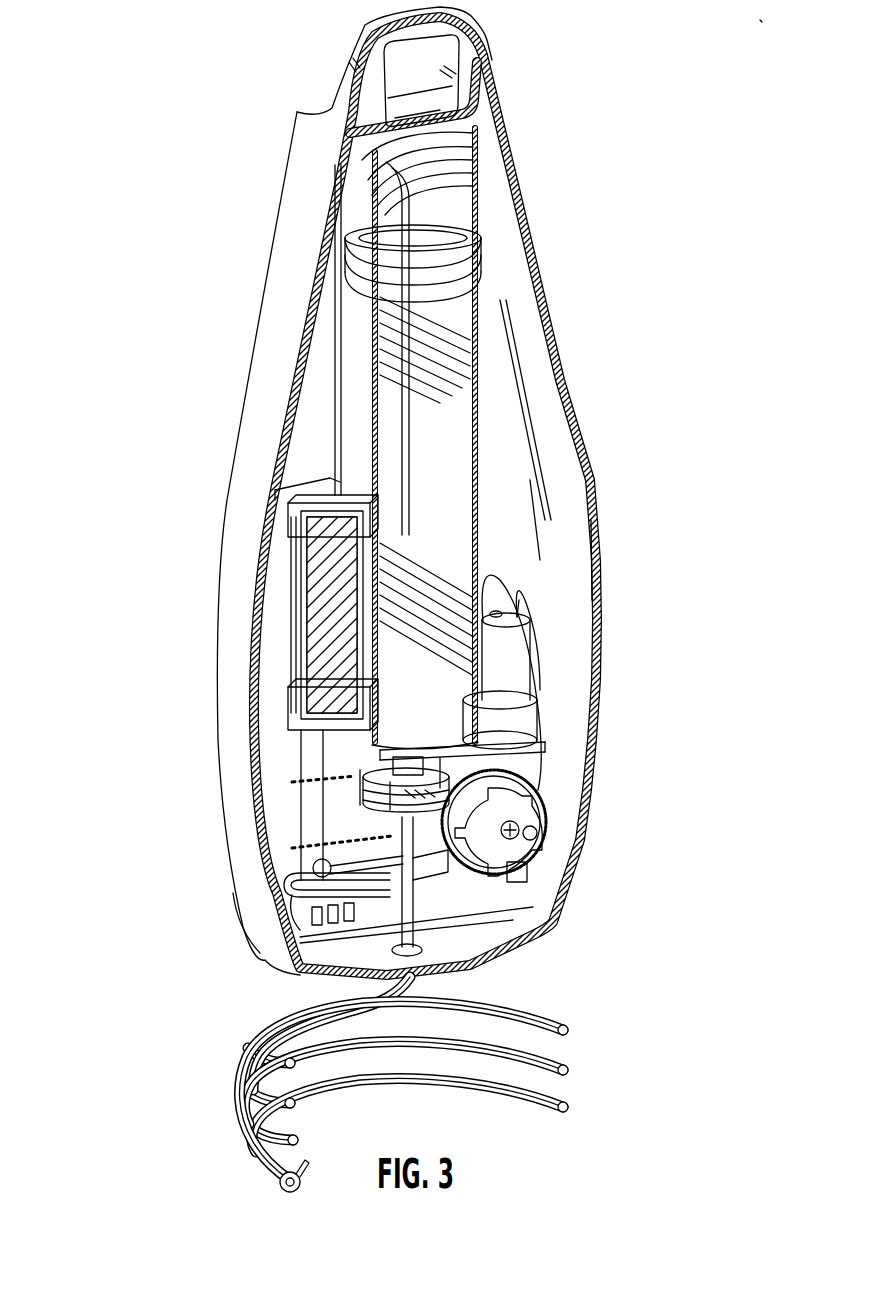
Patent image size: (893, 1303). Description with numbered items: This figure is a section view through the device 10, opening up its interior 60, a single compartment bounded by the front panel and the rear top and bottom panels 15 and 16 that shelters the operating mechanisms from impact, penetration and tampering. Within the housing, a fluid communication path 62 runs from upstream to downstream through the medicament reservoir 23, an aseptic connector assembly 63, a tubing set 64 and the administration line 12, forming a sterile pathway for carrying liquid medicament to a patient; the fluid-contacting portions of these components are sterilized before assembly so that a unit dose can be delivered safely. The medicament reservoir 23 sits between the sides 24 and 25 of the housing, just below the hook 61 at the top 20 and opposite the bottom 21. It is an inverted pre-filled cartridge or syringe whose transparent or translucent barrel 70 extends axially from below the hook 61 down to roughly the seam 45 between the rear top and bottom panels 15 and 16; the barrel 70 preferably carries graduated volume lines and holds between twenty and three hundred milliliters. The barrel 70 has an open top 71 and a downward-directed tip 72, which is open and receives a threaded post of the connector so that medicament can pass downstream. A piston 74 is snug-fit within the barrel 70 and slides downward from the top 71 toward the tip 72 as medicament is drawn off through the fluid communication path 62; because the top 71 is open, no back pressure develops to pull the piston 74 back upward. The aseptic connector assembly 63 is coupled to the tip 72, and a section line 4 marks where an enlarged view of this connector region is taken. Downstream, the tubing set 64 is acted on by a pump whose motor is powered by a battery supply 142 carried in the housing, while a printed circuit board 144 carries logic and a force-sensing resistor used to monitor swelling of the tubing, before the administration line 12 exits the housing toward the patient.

The section line 4- 4 is at (628, 698).
The device 10 is at (752, 80).
The administration line 12 is at (560, 1058).
The rear top panel 15 is at (278, 207).
The rear bottom panel 16 is at (234, 903).
The top 20 is at (490, 36).
The base 21 is at (290, 974).
The medicament reservoir 23 is at (478, 359).
The side 24 is at (214, 605).
The side 25 is at (598, 565).
The seam 45 is at (240, 745).
The interior 60 is at (530, 430).
The hook 61 is at (474, 106).
The fluid communication path 62 is at (484, 558).
The aseptic connector assembly 63 is at (350, 785).
The tubing set 64 is at (426, 874).
The barrel 70 is at (482, 186).
The open top 71 is at (498, 128).
The tip 72 is at (380, 775).
The piston 74 is at (484, 262).
The battery supply 142 is at (302, 575).
The printed circuit board 144 is at (292, 848).